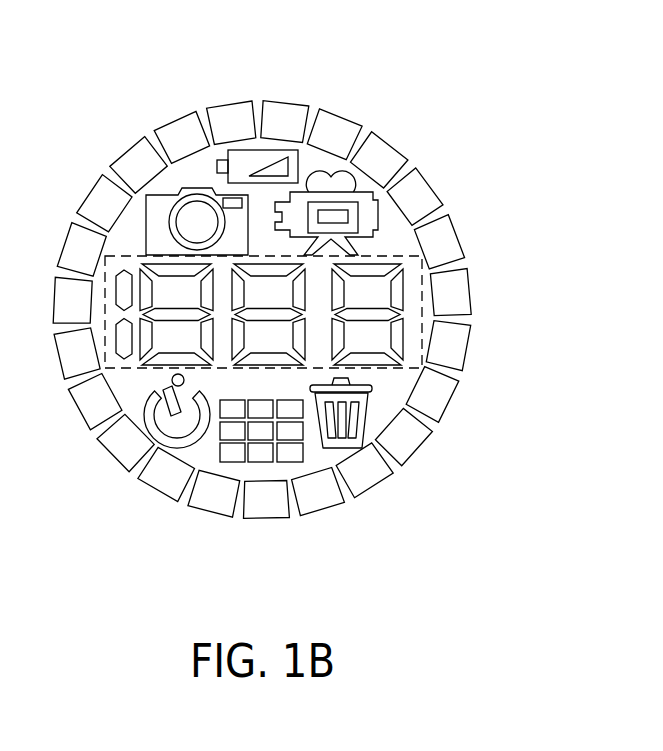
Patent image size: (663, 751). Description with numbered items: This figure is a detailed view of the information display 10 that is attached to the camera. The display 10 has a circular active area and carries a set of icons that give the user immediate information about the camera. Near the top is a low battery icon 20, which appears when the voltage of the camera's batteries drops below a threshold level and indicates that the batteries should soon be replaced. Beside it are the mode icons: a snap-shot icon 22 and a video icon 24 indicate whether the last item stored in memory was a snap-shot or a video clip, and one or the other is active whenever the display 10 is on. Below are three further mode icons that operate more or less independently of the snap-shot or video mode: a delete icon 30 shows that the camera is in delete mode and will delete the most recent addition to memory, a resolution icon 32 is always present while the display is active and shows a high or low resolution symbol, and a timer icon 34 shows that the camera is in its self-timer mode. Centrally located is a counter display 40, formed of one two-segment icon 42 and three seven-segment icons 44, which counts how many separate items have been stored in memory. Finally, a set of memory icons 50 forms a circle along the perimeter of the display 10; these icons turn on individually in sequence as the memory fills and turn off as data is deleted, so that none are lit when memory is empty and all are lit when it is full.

The information display 10 is at (457, 95).
The low battery icon 20 is at (277, 150).
The snap-shot icon 22 is at (147, 208).
The video icon 24 is at (365, 172).
The delete icon 30 is at (367, 422).
The resolution icon 32 is at (263, 463).
The timer icon 34 is at (124, 452).
The counter display 40 is at (105, 351).
The two-segment icon 42 is at (115, 300).
The seven-segment icons 44 is at (386, 257).
The memory icons 50 is at (178, 118).